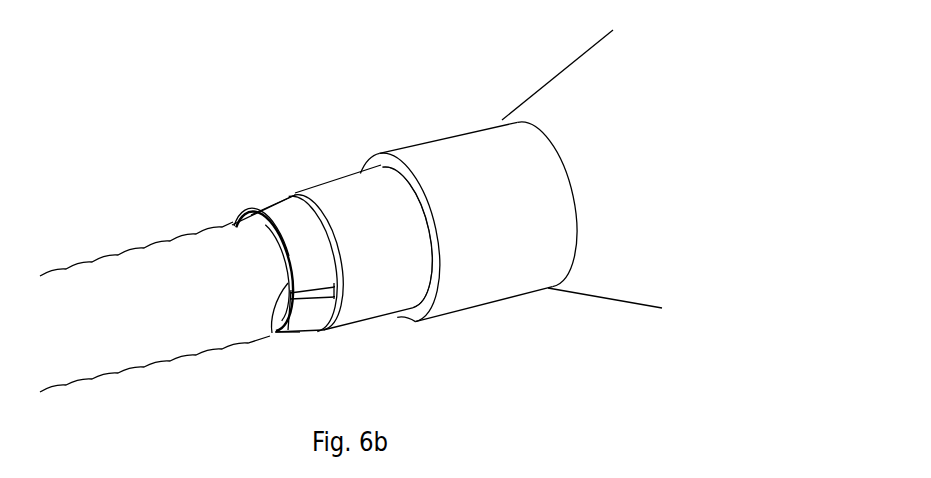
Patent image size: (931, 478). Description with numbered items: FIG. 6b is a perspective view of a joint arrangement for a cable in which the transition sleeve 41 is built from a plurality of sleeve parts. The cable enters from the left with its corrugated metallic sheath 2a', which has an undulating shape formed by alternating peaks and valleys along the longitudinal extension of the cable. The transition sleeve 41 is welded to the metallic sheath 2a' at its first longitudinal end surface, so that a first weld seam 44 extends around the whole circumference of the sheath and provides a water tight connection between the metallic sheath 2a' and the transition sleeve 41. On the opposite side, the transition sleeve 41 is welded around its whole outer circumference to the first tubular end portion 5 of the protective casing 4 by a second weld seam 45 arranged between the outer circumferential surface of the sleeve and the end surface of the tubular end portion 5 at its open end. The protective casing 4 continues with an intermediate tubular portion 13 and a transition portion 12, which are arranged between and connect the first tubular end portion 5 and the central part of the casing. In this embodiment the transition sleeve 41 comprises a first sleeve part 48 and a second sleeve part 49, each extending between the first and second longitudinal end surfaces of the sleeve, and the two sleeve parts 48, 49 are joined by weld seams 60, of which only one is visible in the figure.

The metallic sheath 2a' is at (155, 292).
The protective casing 4 is at (497, 118).
The first tubular end portion 5 is at (347, 198).
The transition portion 12 is at (585, 82).
The intermediate tubular portion 13 is at (462, 157).
The transition sleeve 41 is at (308, 257).
The first weld seam 44 is at (288, 287).
The second weld seam 45 is at (330, 243).
The first sleeve part 48 is at (275, 217).
The second sleeve part 49 is at (298, 322).
The weld seam 60 is at (307, 295).